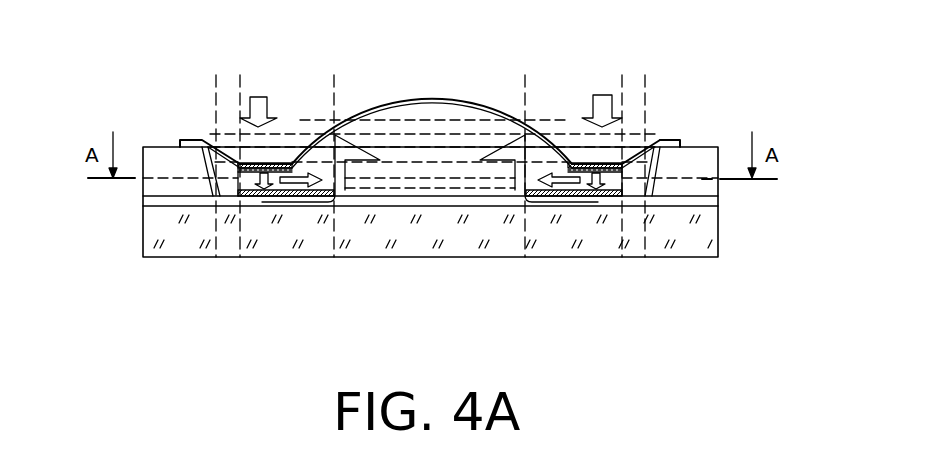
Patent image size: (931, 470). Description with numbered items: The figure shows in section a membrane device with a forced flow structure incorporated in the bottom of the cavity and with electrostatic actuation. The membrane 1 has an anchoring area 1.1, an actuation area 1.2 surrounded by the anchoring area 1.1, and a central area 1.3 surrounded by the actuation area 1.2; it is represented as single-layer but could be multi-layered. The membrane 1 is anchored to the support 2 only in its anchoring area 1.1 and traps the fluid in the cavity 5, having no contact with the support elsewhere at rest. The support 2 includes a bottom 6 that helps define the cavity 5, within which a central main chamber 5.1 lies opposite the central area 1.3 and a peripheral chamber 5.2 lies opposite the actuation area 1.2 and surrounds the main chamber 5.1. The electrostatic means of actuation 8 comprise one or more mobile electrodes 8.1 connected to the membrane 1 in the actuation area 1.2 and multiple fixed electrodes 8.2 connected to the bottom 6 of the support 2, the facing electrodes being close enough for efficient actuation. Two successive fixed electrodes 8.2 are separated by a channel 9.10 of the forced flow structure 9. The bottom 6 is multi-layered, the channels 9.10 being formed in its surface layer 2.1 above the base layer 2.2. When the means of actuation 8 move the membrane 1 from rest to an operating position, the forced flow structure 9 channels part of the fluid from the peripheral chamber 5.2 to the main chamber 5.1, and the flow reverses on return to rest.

The membrane 1 is at (442, 90).
The anchoring area 1.1 is at (673, 135).
The actuation area 1.2 is at (584, 163).
The central area 1.3 is at (447, 101).
The support 2 is at (491, 217).
The surface layer 2.1 is at (704, 204).
The base layer 2.2 is at (707, 238).
The cavity 5 is at (555, 236).
The main chamber 5.1 is at (638, 183).
The peripheral chamber 5.2 is at (635, 300).
The bottom 6 is at (388, 207).
The means of actuation 8 is at (226, 250).
The mobile electrode 8.1 is at (240, 168).
The fixed electrode 8.2 is at (246, 194).
The forced flow structure 9 is at (313, 250).
The channel 9.10 is at (256, 203).